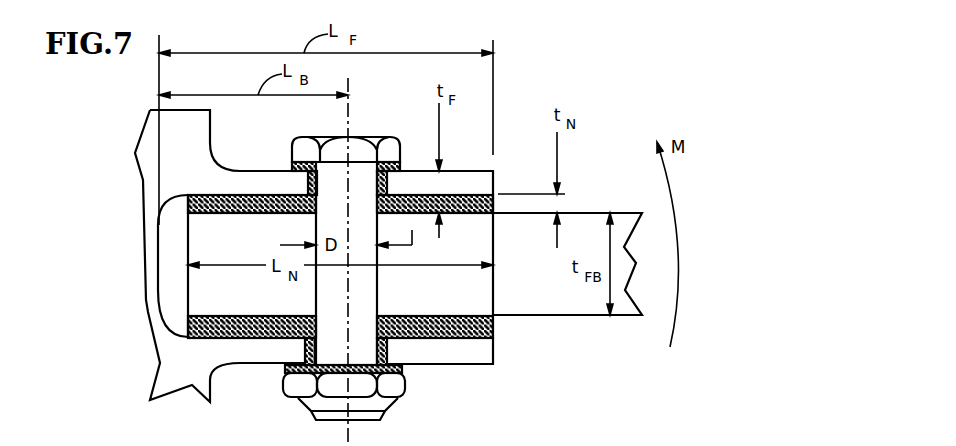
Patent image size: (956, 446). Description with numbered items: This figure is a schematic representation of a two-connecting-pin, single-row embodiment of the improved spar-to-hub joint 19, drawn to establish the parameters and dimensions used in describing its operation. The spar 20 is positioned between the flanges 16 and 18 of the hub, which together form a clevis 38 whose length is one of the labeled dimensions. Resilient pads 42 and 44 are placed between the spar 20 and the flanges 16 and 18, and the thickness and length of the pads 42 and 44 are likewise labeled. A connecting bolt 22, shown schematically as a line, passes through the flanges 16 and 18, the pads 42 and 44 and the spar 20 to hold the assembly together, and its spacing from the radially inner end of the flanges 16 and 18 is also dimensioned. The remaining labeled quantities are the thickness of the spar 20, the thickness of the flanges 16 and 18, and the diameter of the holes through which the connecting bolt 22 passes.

The flange 16 is at (483, 185).
The flange 18 is at (485, 355).
The spar-to-hub joint 19 is at (560, 93).
The spar 20 is at (627, 267).
The connecting bolt 22 is at (353, 150).
The clevis 38 is at (158, 282).
The resilient pad 42 is at (249, 197).
The resilient pad 44 is at (245, 338).